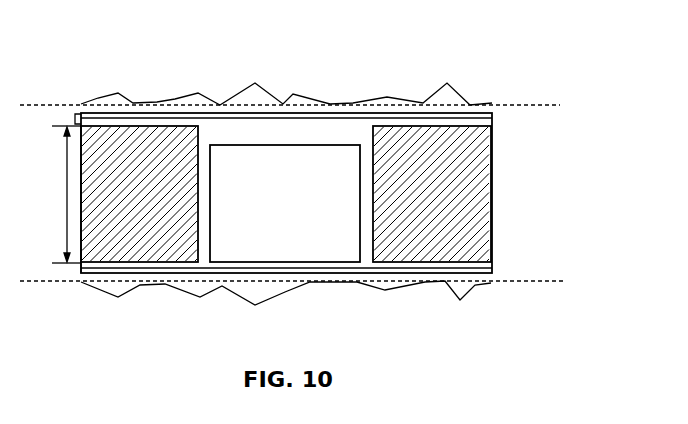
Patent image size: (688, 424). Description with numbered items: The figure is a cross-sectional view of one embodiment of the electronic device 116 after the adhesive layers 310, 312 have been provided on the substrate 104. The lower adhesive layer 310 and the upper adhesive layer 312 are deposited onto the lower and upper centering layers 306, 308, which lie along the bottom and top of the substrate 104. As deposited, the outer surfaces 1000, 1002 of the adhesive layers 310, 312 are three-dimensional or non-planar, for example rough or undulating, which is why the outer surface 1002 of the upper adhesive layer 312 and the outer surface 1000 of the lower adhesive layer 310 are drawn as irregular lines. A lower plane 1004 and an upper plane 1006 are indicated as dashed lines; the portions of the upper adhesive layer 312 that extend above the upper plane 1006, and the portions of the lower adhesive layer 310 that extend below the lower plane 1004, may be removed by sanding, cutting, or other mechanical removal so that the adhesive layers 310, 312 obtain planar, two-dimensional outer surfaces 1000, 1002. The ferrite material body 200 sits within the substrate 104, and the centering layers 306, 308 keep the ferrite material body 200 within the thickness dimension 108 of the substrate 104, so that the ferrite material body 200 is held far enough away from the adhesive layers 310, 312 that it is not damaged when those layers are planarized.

The substrate 104 is at (493, 198).
The thickness dimension 108 is at (66, 168).
The electronic device 116 is at (517, 79).
The ferrite material body 200 is at (276, 250).
The lower centering layer 306 is at (81, 265).
The upper centering layer 308 is at (75, 120).
The lower adhesive layer 310 is at (493, 276).
The upper adhesive layer 312 is at (493, 112).
The outer surface of lower adhesive layer 1000 is at (388, 290).
The outer surface of upper adhesive layer 1002 is at (316, 105).
The lower plane 1004 is at (547, 282).
The upper plane 1006 is at (527, 106).